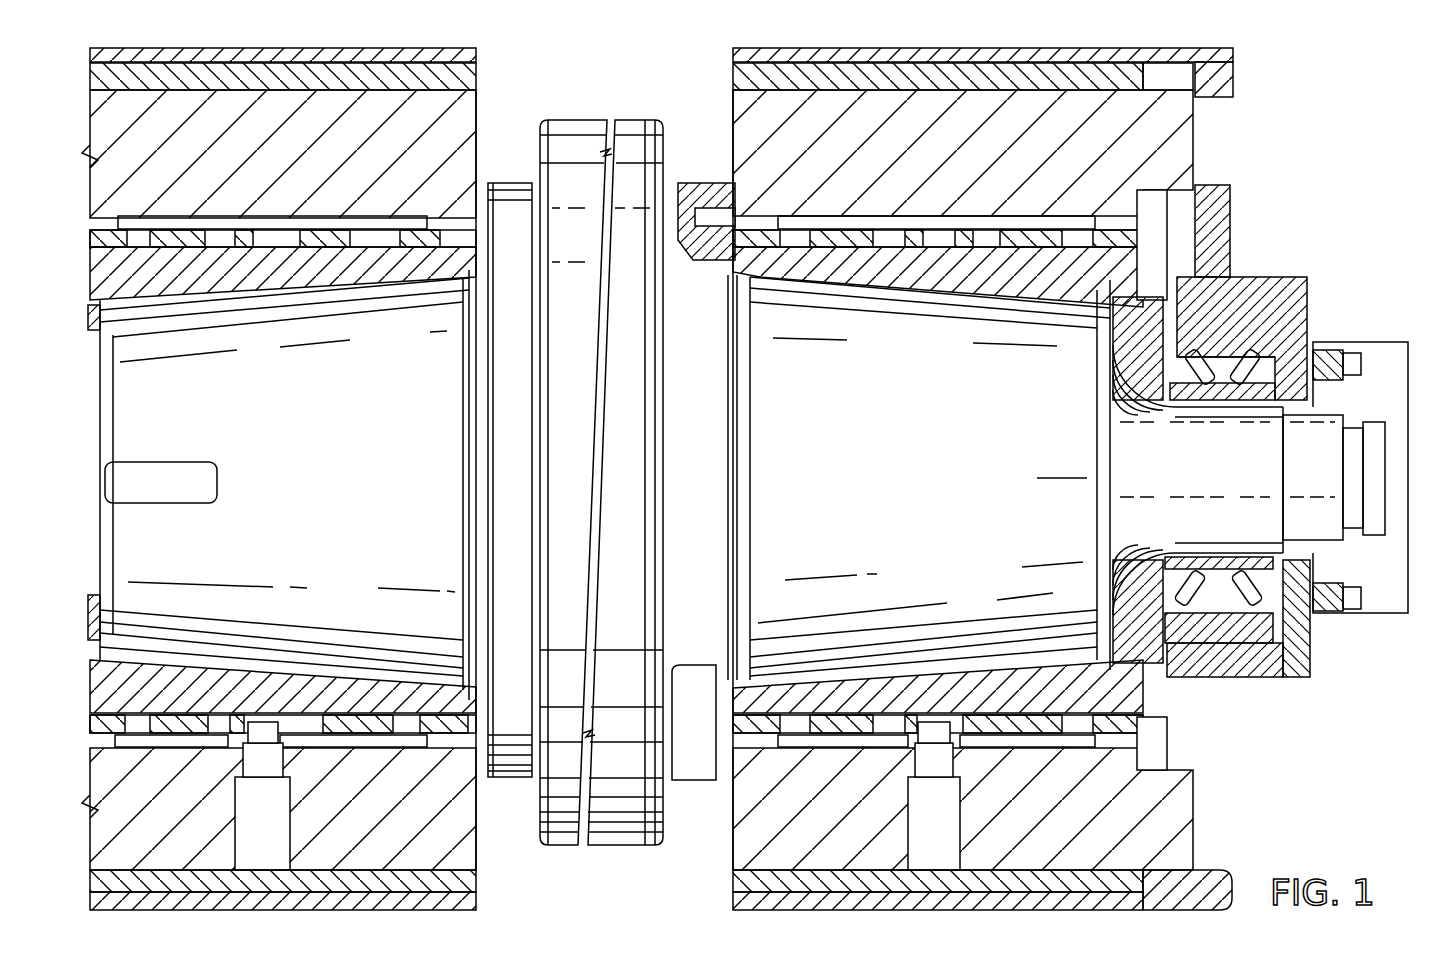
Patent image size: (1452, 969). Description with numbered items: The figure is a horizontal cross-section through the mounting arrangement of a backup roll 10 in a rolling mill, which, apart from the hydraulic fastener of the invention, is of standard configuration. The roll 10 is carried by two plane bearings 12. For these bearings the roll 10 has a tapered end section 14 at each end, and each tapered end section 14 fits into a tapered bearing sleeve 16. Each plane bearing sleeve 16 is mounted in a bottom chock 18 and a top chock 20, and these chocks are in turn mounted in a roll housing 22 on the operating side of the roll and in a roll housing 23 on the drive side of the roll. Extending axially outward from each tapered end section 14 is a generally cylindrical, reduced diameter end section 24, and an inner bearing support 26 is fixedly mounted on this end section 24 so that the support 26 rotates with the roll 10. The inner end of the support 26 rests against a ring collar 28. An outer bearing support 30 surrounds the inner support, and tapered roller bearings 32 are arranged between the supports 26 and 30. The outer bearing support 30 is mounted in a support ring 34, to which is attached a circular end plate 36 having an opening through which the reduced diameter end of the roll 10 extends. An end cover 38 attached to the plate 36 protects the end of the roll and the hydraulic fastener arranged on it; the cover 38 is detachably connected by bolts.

The backup roll 10 is at (968, 384).
The plane bearing 12 is at (237, 300).
The tapered end section 14 is at (393, 520).
The tapered bearing sleeve 16 is at (290, 660).
The bottom chock 18 is at (1168, 805).
The top chock 20 is at (1197, 137).
The roll housing 22 is at (733, 53).
The roll housing 23 is at (478, 54).
The reduced diameter end section 24 is at (1207, 476).
The inner bearing support 26 is at (1140, 430).
The ring collar 28 is at (1128, 338).
The outer bearing support 30 is at (1303, 650).
The tapered roller bearings 32 is at (1280, 305).
The support ring 34 is at (1268, 688).
The circular end plate 36 is at (1223, 183).
The end cover 38 is at (1383, 343).